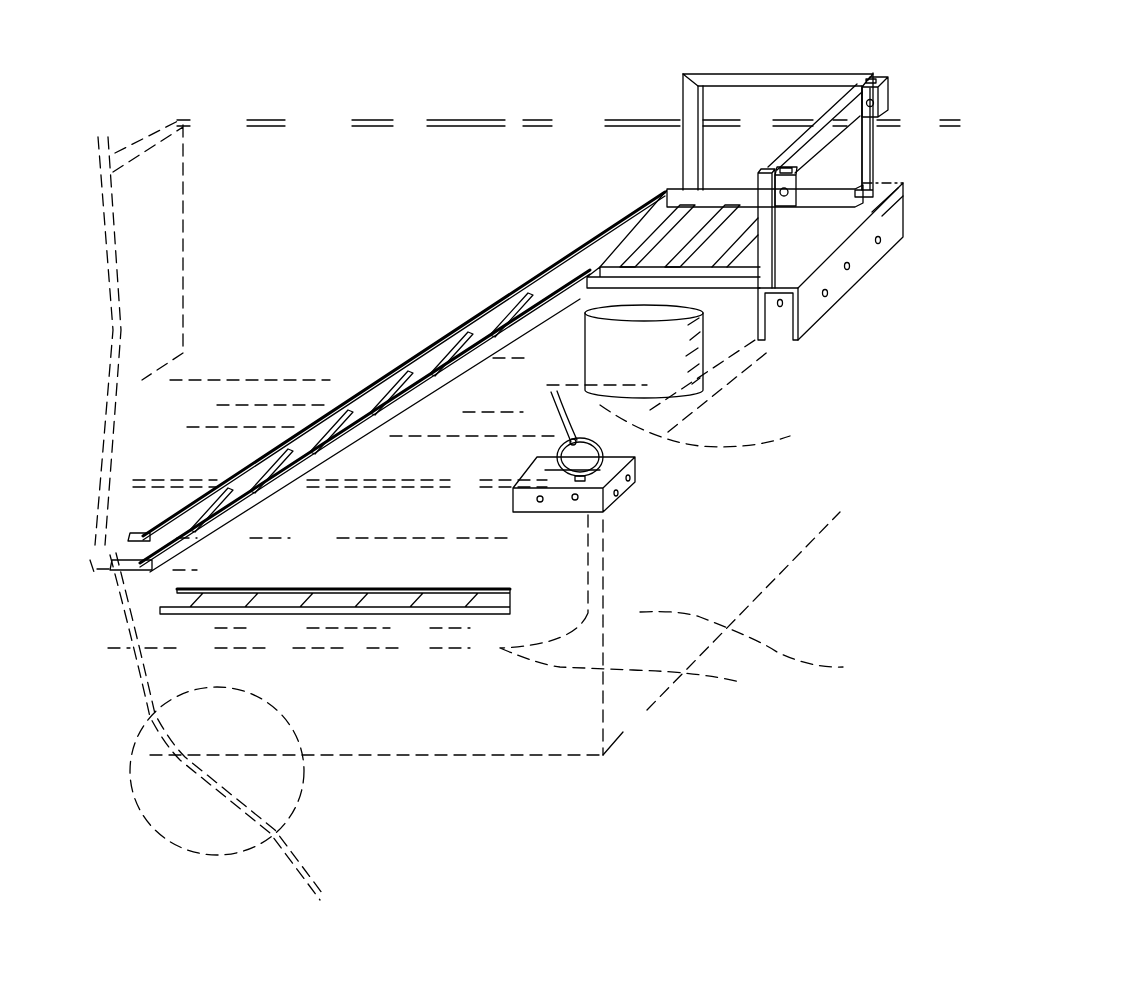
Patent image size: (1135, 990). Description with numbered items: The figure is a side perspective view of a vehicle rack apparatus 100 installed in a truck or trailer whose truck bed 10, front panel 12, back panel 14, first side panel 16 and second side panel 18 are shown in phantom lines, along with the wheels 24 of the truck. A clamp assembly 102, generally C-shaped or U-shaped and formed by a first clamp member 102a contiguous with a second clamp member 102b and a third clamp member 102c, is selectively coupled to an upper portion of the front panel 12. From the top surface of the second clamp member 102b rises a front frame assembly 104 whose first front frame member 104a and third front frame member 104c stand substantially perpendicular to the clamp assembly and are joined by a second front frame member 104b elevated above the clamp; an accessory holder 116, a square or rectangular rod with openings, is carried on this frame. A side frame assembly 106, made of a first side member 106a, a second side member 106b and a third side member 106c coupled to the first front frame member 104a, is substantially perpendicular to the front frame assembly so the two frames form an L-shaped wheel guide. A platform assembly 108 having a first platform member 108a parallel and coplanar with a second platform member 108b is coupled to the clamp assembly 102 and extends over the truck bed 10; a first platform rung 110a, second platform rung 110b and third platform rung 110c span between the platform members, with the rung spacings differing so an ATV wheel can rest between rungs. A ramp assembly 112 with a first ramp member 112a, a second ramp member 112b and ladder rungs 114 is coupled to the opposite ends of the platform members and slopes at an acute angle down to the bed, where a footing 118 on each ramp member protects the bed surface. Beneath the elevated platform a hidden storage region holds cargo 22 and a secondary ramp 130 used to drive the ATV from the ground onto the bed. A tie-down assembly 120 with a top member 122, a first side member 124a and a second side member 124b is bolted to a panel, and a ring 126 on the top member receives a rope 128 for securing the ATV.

The truck bed 10 is at (464, 403).
The front panel 12 is at (672, 523).
The back panel 14 is at (119, 230).
The first side panel 16 is at (429, 175).
The second side panel 18 is at (402, 705).
The cargo 22 is at (621, 350).
The wheels 24 is at (174, 810).
The vehicle rack apparatus 100 is at (490, 245).
The clamp assembly 102 is at (857, 273).
The first clamp member 102a is at (882, 266).
The second clamp member 102b is at (903, 185).
The third clamp member 102c is at (772, 343).
The front frame assembly 104 is at (825, 197).
The first front frame member 104a is at (870, 160).
The second front frame member 104b is at (790, 150).
The third front frame member 104c is at (760, 283).
The side frame assembly 106 is at (771, 110).
The first side member 106a is at (688, 105).
The second side member 106b is at (822, 80).
The third side member 106c is at (877, 138).
The platform assembly 108 is at (691, 255).
The first platform member 108a is at (605, 290).
The second platform member 108b is at (720, 236).
The first platform rung 110a is at (757, 215).
The second platform rung 110b is at (645, 215).
The third platform rung 110c is at (625, 236).
The ramp assembly 112 is at (382, 382).
The first ramp member 112a is at (402, 417).
The second ramp member 112b is at (442, 347).
The ladder rungs 114 is at (503, 305).
The accessory holder 116 is at (886, 95).
The footing 118 is at (127, 563).
The tie-down assembly 120 is at (585, 460).
The top member 122 is at (542, 467).
The first side member 124a is at (562, 507).
The second side member 124b is at (627, 487).
The ring 126 is at (556, 448).
The rope 128 is at (551, 410).
The secondary ramp 130 is at (305, 616).